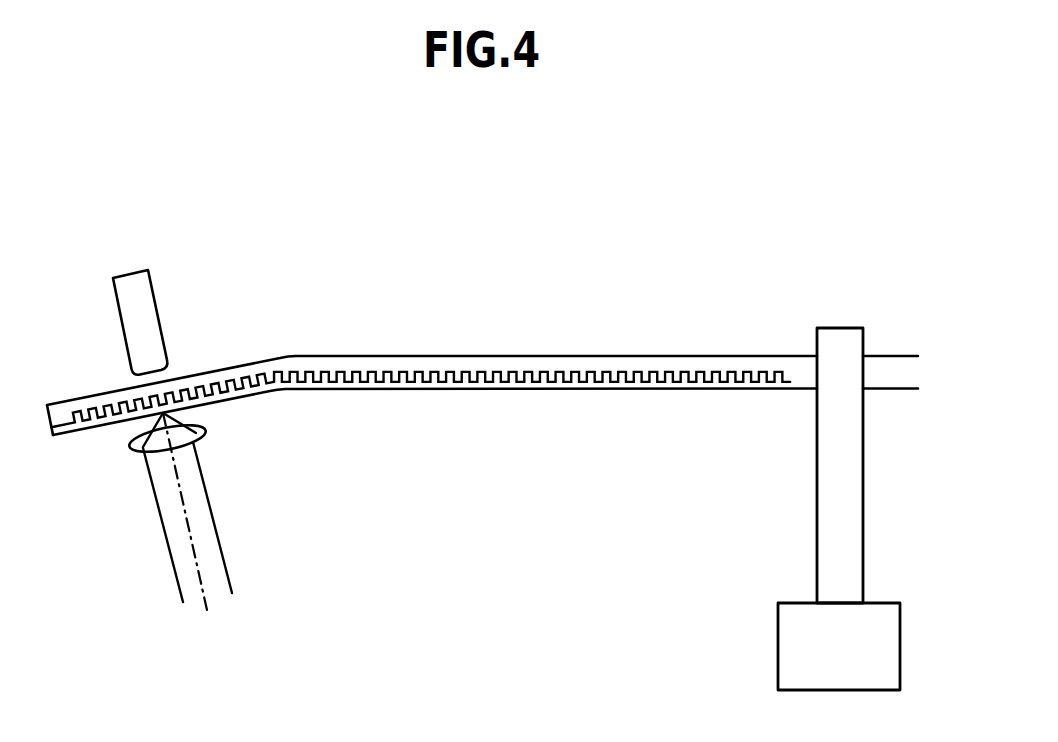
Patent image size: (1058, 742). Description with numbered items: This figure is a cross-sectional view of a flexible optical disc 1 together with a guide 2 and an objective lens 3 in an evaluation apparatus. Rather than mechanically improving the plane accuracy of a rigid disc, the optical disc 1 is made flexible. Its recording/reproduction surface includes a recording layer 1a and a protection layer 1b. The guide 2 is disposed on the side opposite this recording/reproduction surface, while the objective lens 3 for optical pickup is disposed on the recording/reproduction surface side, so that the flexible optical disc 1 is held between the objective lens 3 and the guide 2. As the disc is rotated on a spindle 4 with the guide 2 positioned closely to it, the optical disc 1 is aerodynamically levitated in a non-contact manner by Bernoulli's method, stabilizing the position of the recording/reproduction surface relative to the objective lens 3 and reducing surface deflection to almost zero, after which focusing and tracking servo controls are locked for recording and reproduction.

The optical disc 1 is at (277, 368).
The recording layer 1a is at (540, 377).
The protection layer 1b is at (480, 388).
The guide 2 is at (133, 285).
The objective lens 3 is at (208, 433).
The spindle 4 is at (787, 637).